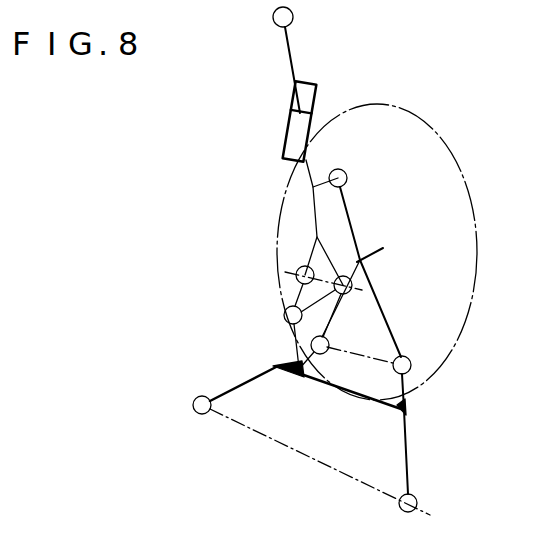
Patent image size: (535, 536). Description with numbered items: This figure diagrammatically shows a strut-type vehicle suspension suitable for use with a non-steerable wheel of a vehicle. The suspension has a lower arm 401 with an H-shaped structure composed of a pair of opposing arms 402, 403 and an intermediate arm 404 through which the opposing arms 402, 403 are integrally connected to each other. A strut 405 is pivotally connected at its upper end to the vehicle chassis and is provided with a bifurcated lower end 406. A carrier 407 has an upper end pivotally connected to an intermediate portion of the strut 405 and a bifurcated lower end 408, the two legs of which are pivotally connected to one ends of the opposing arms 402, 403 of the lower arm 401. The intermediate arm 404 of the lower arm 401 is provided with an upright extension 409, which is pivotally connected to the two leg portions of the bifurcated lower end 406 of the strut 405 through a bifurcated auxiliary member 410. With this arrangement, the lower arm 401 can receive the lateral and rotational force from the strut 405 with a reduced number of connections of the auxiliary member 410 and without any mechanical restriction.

The lower arm 401 is at (407, 432).
The opposing arm 402 is at (233, 389).
The opposing arm 403 is at (407, 477).
The intermediate arm 404 is at (333, 383).
The strut 405 is at (398, 83).
The bifurcated lower end 406 is at (308, 250).
The carrier 407 is at (351, 208).
The bifurcated lower end 408 is at (382, 307).
The upright extension 409 is at (300, 343).
The bifurcated auxiliary member 410 is at (298, 293).